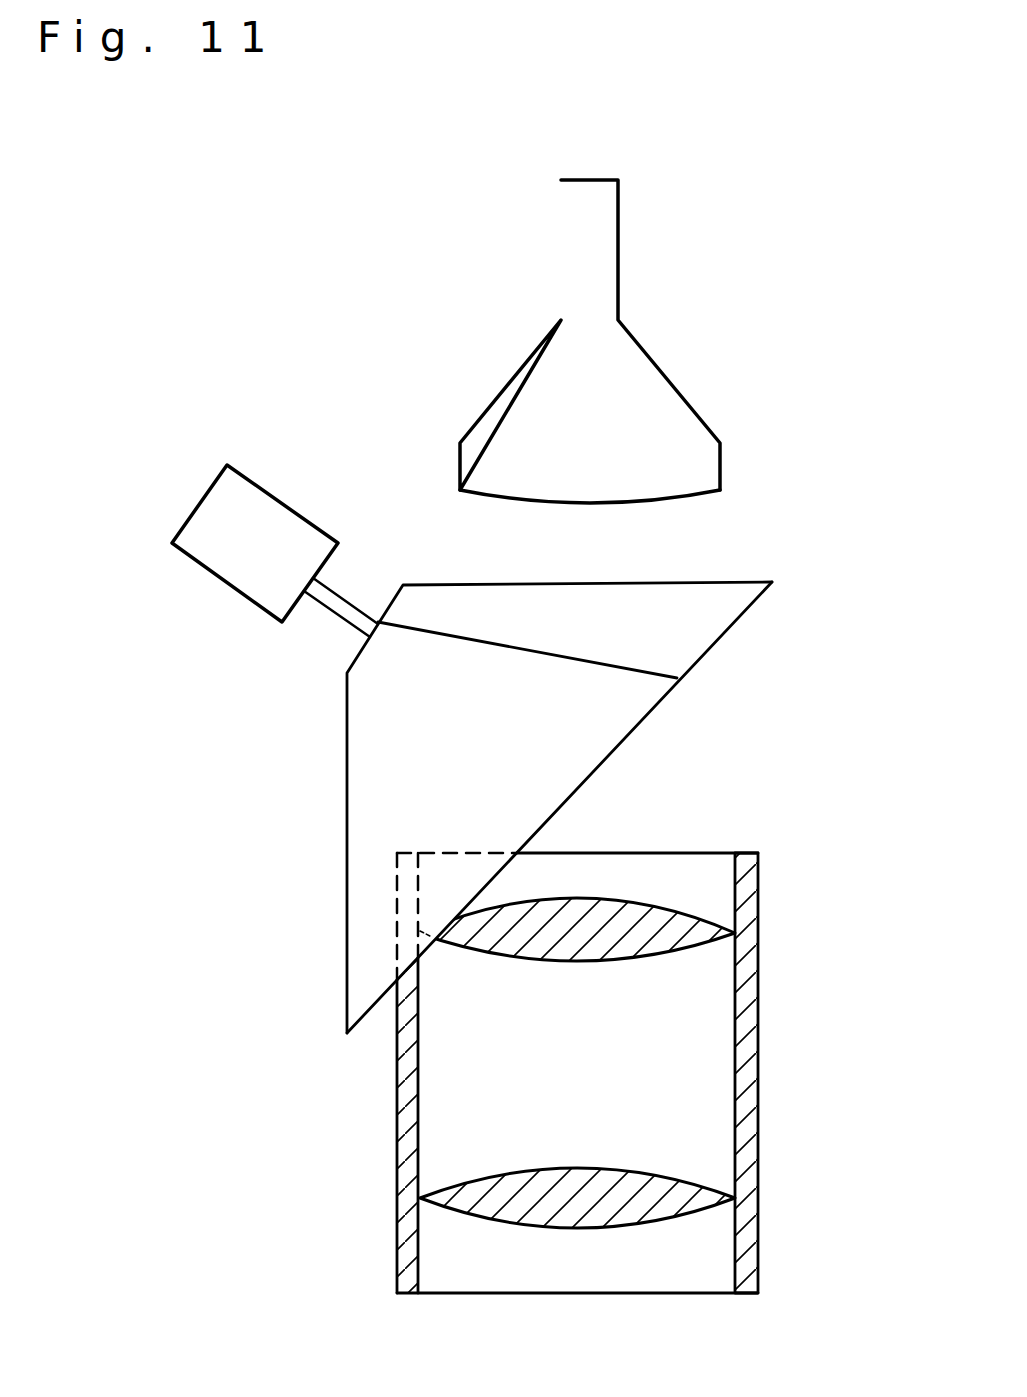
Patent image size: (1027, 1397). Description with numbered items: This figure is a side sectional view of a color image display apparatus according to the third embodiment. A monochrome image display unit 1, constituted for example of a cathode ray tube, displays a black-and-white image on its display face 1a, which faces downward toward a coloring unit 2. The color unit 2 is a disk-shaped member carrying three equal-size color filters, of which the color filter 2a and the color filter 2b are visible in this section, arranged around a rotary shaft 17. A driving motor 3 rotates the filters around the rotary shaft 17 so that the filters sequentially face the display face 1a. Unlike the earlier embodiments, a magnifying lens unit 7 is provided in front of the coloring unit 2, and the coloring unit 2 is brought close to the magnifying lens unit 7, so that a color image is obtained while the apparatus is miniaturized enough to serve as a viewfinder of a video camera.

The monochrome image display unit 1 is at (672, 383).
The display face 1a is at (665, 502).
The color unit 2 is at (632, 807).
The color filter 2a is at (730, 600).
The color filter 2b is at (590, 748).
The driving motor 3 is at (292, 508).
The rotary shaft 17 is at (340, 617).
The magnifying lens unit 7 is at (758, 1032).